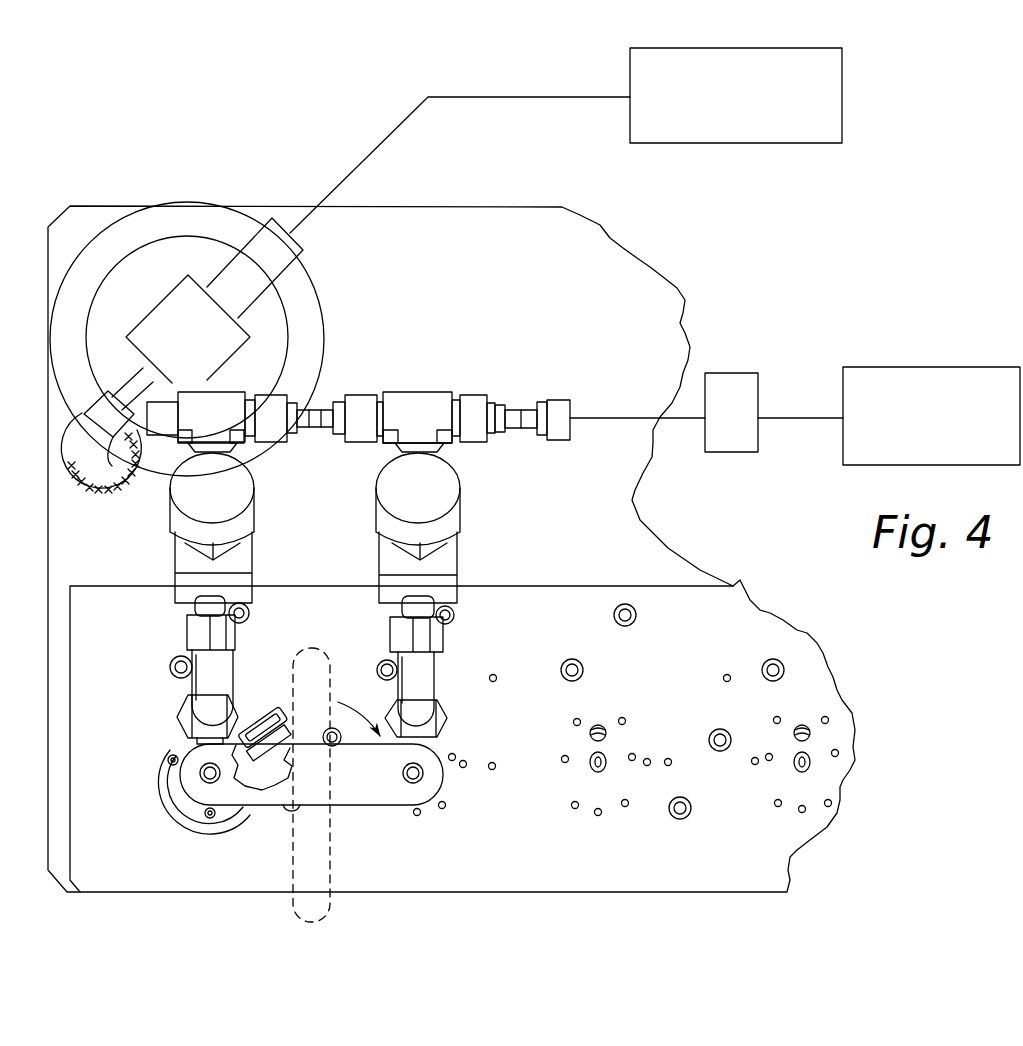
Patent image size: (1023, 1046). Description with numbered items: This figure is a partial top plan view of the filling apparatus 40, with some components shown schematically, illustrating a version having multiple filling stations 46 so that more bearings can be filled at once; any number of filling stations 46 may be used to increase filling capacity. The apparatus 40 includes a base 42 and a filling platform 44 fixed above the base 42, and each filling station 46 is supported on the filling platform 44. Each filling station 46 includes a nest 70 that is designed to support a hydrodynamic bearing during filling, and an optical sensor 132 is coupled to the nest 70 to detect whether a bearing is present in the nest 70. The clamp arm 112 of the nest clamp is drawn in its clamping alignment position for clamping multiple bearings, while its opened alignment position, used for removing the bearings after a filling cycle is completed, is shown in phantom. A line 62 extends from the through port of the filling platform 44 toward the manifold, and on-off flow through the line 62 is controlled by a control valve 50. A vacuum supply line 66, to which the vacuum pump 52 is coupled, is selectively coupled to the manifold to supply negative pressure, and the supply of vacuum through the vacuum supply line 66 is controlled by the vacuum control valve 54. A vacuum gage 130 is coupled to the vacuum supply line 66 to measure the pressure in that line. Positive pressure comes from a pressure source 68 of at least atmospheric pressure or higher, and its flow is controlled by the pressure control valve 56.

The filling apparatus 40 is at (852, 182).
The base 42 is at (636, 289).
The filling platform 44 is at (783, 663).
The filling station 46 is at (275, 701).
The control valve 50 is at (228, 487).
The vacuum pump 52 is at (846, 82).
The vacuum control valve 54 is at (176, 306).
The pressure control valve 56 is at (719, 372).
The line 62 is at (220, 675).
The vacuum supply line 66 is at (75, 485).
The pressure source 68 is at (946, 367).
The nest 70 is at (173, 805).
The clamp arm 112 is at (343, 706).
The vacuum gage 130 is at (263, 243).
The optical sensor 132 is at (243, 727).